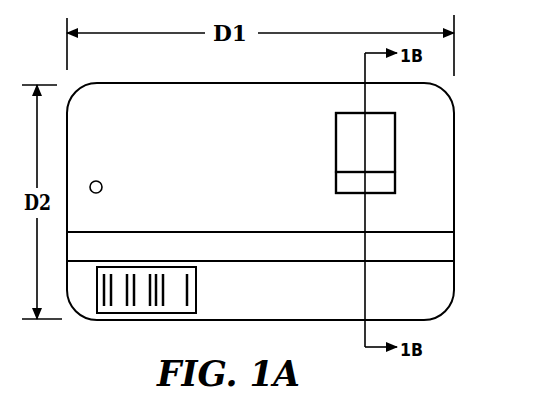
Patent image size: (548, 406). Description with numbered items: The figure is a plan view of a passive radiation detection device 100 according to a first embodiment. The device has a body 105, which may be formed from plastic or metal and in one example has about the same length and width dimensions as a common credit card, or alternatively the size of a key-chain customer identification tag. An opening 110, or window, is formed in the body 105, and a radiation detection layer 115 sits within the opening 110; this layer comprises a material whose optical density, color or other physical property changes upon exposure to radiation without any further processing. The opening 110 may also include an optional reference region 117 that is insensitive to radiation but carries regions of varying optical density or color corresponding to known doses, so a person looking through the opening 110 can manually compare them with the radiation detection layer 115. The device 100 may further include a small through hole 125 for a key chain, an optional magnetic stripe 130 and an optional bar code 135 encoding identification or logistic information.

The passive radiation detection device 100 is at (302, 171).
The body 105 is at (428, 306).
The opening 110 is at (388, 166).
The radiation detection layer 115 is at (343, 142).
The reference region 117 is at (343, 180).
The through hole 125 is at (99, 181).
The magnetic stripe 130 is at (181, 253).
The bar code 135 is at (142, 270).